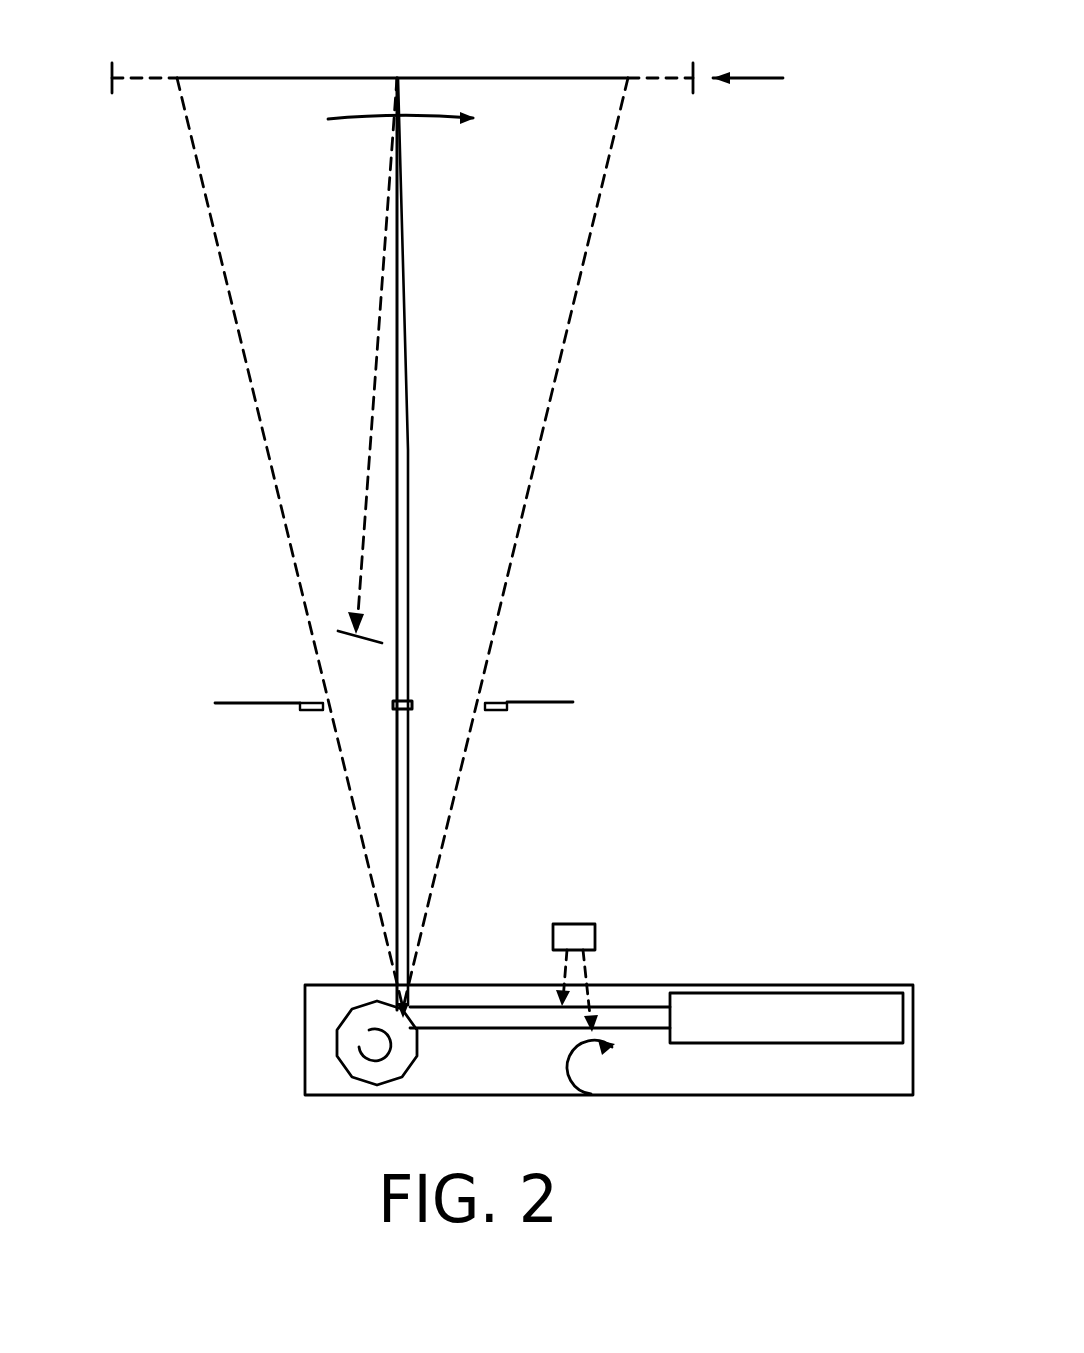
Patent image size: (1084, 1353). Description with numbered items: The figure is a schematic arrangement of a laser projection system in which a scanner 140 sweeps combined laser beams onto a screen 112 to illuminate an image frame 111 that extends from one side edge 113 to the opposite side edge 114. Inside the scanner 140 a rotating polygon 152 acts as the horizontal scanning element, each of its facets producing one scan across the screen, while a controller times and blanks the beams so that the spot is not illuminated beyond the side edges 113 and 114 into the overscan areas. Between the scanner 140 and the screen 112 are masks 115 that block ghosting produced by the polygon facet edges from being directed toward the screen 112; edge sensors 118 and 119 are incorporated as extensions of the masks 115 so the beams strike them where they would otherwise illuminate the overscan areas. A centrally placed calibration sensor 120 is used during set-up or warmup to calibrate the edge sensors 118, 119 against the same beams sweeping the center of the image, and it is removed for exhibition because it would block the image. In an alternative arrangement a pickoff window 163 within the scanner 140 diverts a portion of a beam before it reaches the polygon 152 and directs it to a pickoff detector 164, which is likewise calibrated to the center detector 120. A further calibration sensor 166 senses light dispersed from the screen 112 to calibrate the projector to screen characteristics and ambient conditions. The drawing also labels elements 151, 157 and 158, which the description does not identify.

The image frame 111 is at (402, 139).
The screen 112 is at (778, 81).
The side edge 113 is at (113, 60).
The side edge 114 is at (690, 57).
The masks 115 is at (527, 702).
The edge sensor 118 is at (261, 737).
The edge sensor 119 is at (559, 724).
The calibration sensor 120 is at (493, 762).
The scanner 140 is at (546, 984).
The controller 151 is at (786, 977).
The rotating polygon 152 is at (312, 1019).
The light beam 157 is at (326, 548).
The scanning beam 158 is at (437, 356).
The pickoff window 163 is at (662, 1090).
The pickoff detector 164 is at (634, 945).
The calibration sensor 166 is at (473, 601).